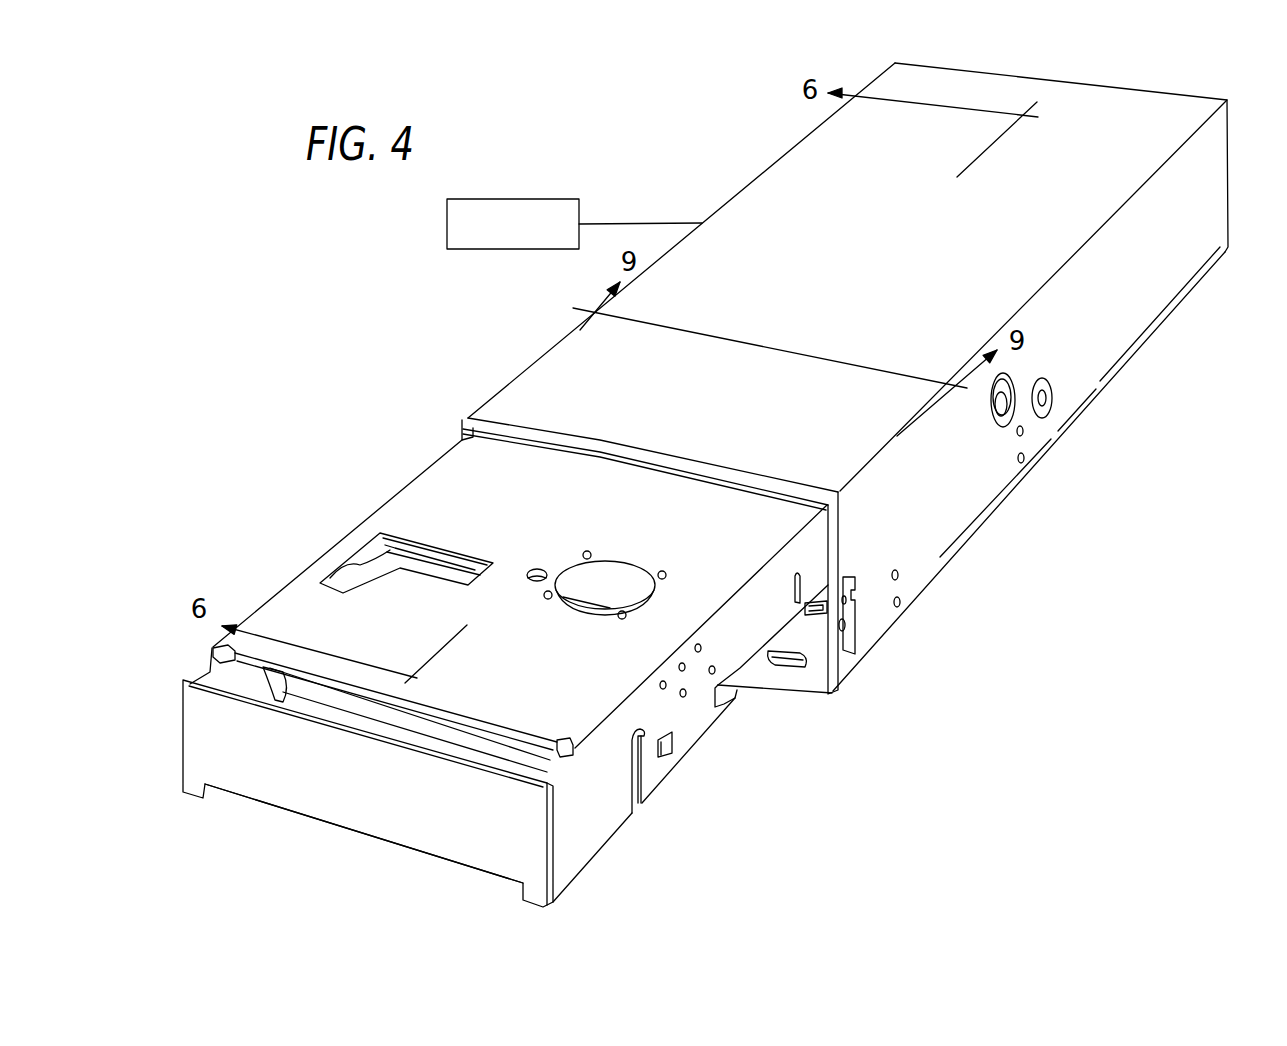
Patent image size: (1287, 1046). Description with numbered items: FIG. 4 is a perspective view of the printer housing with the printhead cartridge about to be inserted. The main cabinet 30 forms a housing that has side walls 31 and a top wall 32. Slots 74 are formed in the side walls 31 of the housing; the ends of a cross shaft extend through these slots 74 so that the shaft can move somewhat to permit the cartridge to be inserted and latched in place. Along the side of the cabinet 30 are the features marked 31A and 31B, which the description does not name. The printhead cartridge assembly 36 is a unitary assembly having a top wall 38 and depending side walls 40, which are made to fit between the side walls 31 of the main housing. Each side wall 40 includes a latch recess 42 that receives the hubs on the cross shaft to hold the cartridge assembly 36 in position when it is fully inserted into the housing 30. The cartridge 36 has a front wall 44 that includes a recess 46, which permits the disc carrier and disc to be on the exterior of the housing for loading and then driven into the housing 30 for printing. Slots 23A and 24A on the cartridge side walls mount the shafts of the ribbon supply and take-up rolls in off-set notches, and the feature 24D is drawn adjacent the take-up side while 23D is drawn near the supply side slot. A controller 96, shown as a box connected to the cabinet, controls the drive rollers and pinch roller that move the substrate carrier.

The main cabinet 30 is at (870, 398).
The top wall 32 is at (1138, 157).
The side walls 31 is at (955, 523).
The side rail 31A is at (1000, 483).
The front rail bracket 31B is at (847, 658).
The slots 74 is at (1013, 375).
The latch recess 42 is at (723, 688).
The slot 24A is at (797, 593).
The latch catch 24D is at (797, 573).
The controller 96 is at (467, 250).
The printhead cartridge assembly 36 is at (505, 657).
The top wall 38 is at (510, 482).
The front wall 44 is at (288, 785).
The recess 46 is at (510, 883).
The side walls 40 is at (662, 773).
The latch arm 23D is at (643, 723).
The slot 23A is at (637, 768).